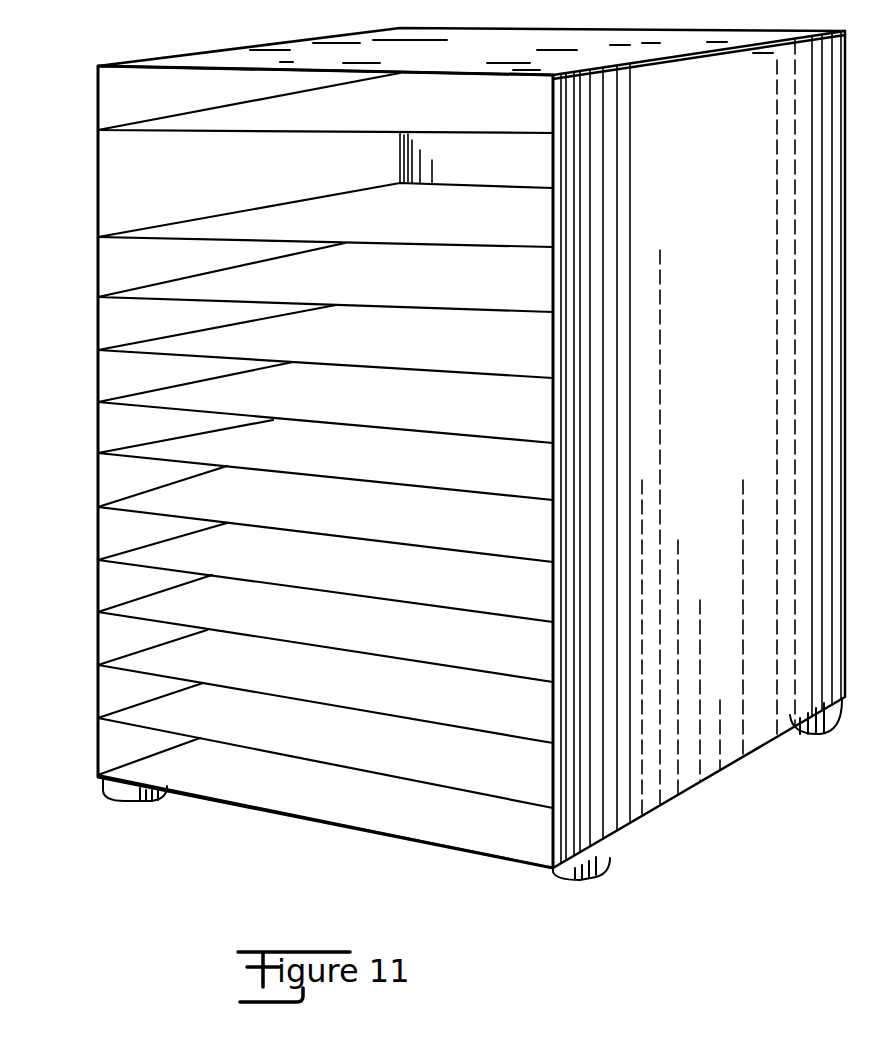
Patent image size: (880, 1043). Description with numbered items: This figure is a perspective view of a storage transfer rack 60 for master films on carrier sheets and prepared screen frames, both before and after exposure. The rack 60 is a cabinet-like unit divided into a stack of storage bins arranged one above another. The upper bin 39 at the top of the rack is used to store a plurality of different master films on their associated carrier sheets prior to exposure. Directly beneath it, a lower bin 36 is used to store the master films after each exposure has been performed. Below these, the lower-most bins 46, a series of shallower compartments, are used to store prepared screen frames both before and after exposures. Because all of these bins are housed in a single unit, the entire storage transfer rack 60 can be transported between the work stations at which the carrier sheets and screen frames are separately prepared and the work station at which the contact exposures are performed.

The upper bin 39 is at (100, 87).
The lower bin 36 is at (100, 184).
The lower-most bins 46 is at (100, 390).
The storage transfer rack 60 is at (744, 868).